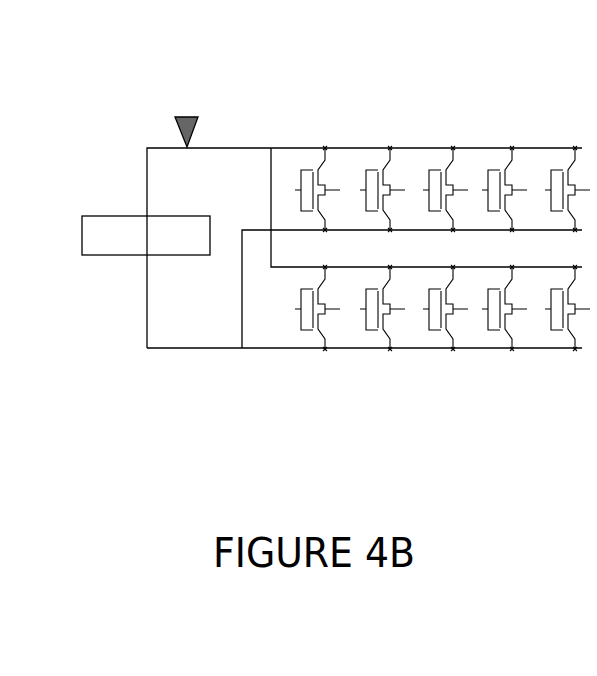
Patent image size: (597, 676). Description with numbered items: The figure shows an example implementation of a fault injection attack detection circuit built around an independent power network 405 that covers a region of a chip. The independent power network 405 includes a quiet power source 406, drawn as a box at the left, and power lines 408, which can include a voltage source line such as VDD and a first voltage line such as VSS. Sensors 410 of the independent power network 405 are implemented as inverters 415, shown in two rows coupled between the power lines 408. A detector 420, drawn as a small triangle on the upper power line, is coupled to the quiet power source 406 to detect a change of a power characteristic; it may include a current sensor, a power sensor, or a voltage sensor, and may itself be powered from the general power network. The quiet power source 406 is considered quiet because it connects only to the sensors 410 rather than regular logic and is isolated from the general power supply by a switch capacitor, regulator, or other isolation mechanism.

The independent power network 405 is at (95, 338).
The quiet power source 406 is at (115, 255).
The power lines 408 is at (178, 348).
The sensors 410 is at (288, 358).
The inverters 415 is at (308, 167).
The detector 420 is at (180, 128).